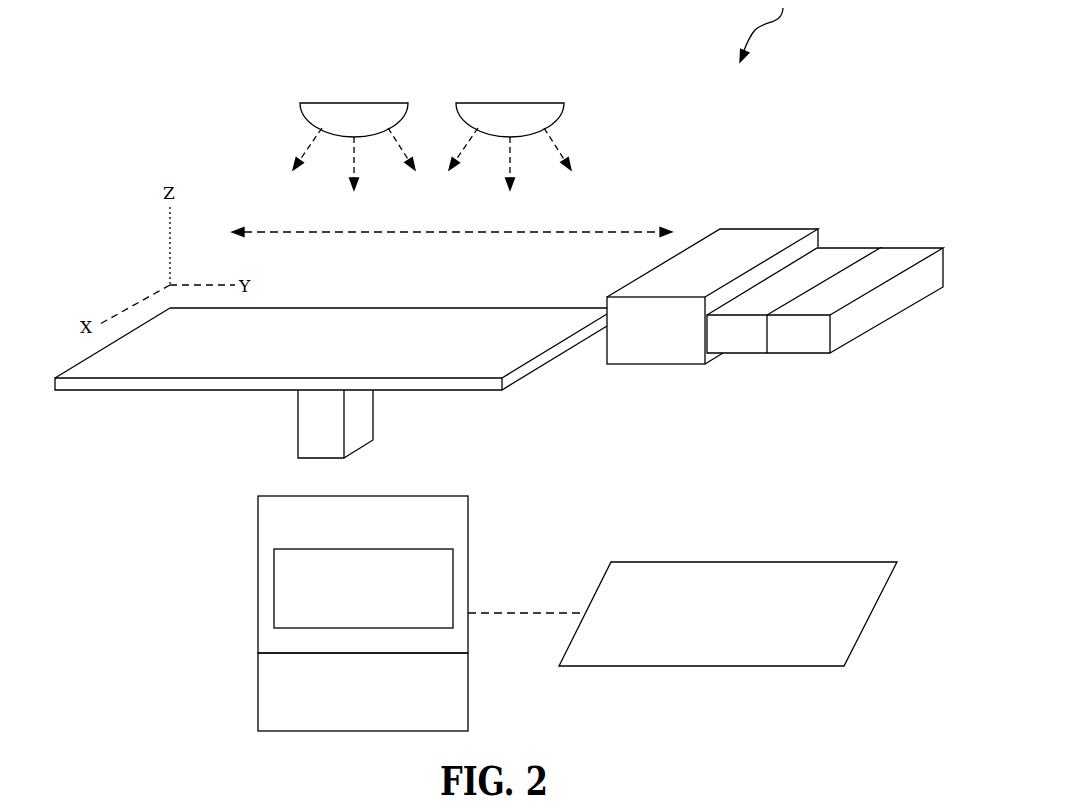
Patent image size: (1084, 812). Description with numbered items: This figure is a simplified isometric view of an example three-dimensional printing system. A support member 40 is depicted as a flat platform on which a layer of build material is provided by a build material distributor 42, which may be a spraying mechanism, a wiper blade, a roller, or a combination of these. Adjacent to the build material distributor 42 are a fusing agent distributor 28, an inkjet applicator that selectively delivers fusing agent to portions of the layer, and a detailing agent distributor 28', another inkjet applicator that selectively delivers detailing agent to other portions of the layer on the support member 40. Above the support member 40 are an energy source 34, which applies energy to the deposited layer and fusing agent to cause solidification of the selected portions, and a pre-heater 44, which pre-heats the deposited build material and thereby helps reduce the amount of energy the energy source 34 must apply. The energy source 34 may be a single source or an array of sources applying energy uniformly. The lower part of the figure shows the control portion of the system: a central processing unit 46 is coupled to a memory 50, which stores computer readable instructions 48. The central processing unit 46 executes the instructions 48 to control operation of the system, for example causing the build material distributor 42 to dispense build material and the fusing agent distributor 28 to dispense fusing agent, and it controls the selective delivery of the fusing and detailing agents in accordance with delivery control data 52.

The energy source 34 is at (353, 103).
The pre-heater 44 is at (509, 103).
The support member 40 is at (388, 308).
The build material distributor 42 is at (768, 229).
The fusing agent distributor 28 is at (793, 257).
The detailing agent distributor 28' is at (855, 257).
The memory 50 is at (275, 522).
The computer readable instructions 48 is at (275, 588).
The central processing unit 46 is at (258, 690).
The delivery control data 52 is at (752, 562).